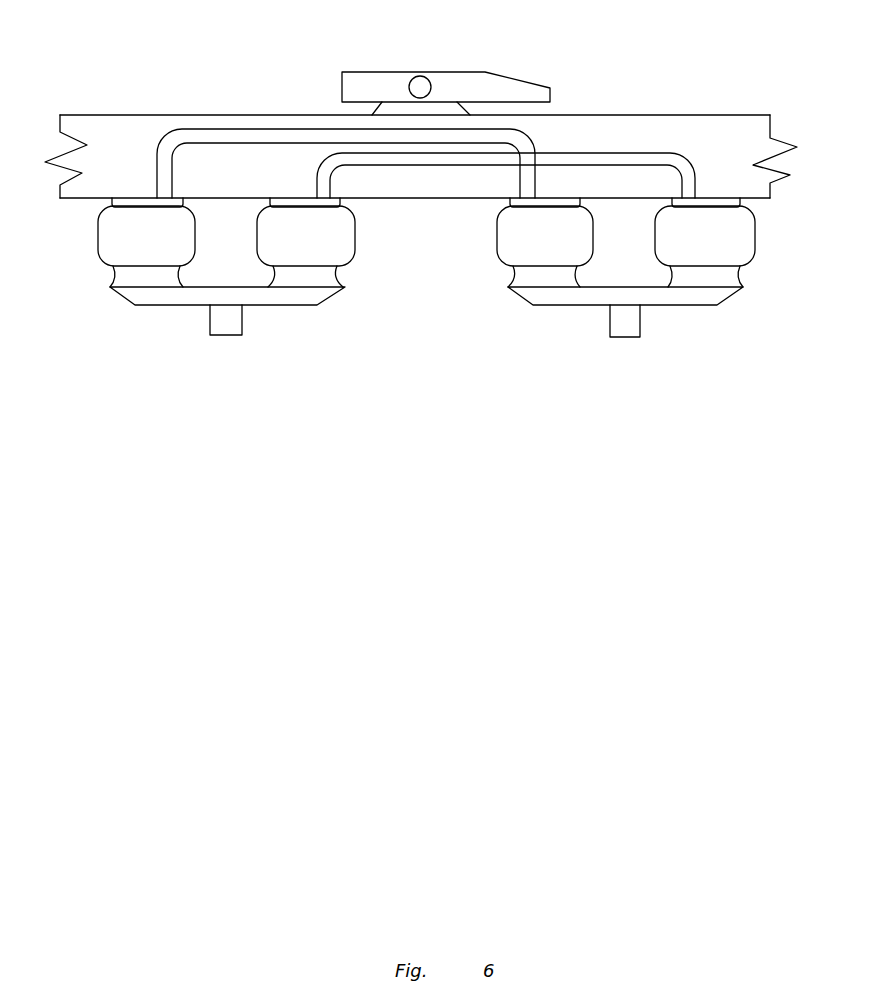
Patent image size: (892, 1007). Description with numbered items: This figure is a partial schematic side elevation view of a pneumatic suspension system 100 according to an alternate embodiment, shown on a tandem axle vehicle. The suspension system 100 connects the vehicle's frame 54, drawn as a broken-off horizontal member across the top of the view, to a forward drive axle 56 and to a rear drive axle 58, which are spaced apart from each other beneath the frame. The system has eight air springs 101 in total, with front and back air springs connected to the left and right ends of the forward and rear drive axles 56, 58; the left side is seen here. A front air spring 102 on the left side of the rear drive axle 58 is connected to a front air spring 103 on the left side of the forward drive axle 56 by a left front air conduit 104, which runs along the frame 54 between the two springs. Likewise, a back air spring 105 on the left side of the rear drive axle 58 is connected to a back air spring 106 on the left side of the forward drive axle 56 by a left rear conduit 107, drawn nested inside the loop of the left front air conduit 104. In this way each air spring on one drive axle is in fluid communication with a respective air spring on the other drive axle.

The frame 54 is at (700, 127).
The forward drive axle 56 is at (225, 323).
The rear drive axle 58 is at (617, 323).
The suspension system 100 is at (758, 223).
The air springs 101 is at (683, 62).
The front air spring 102 is at (520, 232).
The front air spring 103 is at (145, 237).
The left front air conduit 104 is at (208, 128).
The back air spring 105 is at (723, 250).
The back air spring 106 is at (282, 248).
The left rear conduit 107 is at (558, 153).